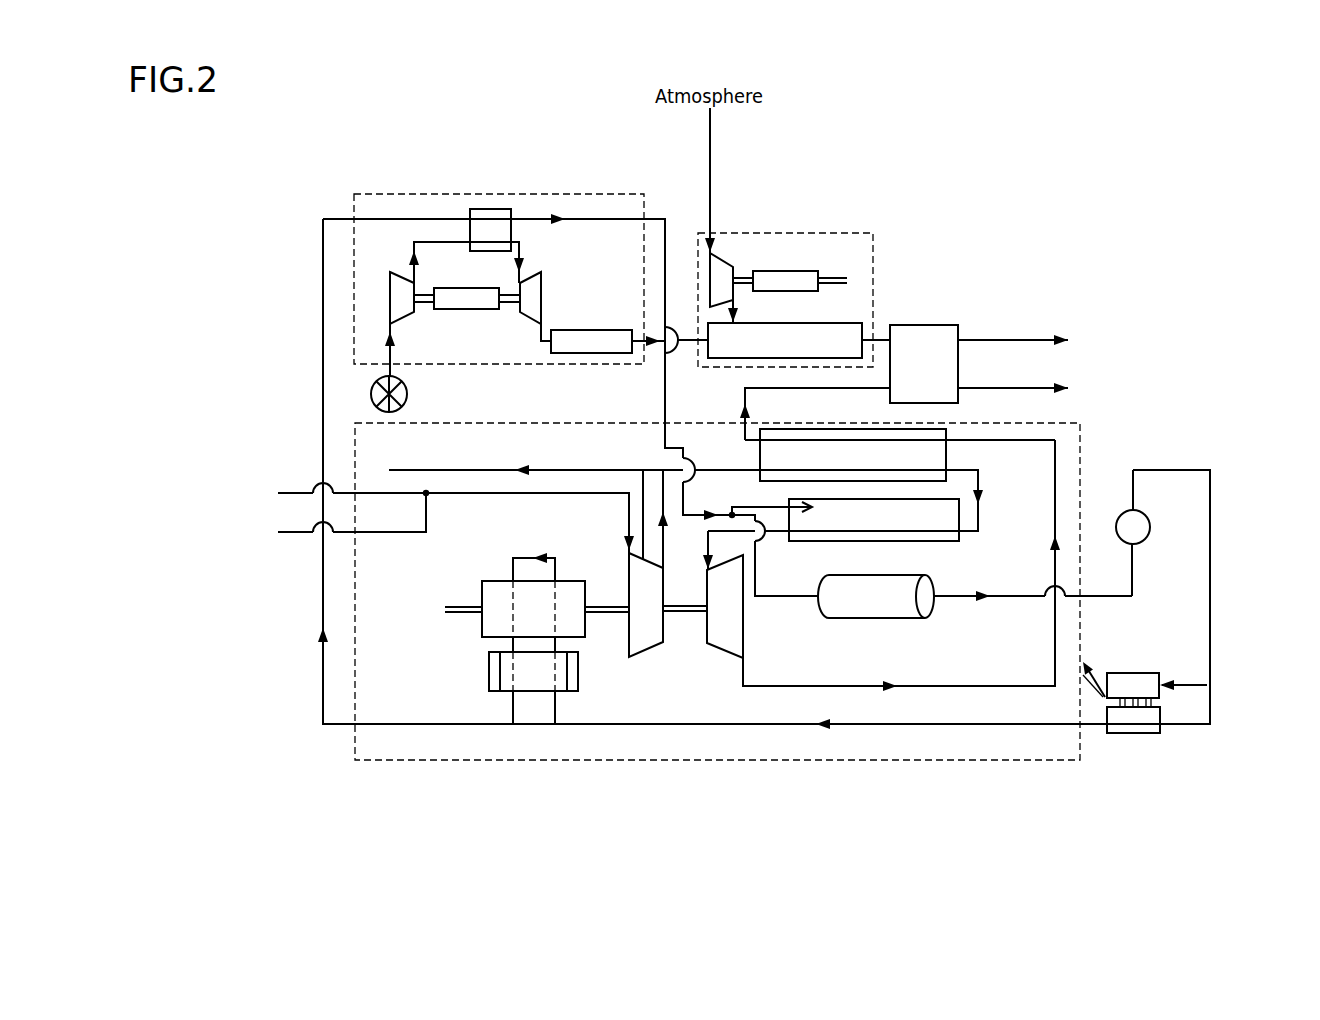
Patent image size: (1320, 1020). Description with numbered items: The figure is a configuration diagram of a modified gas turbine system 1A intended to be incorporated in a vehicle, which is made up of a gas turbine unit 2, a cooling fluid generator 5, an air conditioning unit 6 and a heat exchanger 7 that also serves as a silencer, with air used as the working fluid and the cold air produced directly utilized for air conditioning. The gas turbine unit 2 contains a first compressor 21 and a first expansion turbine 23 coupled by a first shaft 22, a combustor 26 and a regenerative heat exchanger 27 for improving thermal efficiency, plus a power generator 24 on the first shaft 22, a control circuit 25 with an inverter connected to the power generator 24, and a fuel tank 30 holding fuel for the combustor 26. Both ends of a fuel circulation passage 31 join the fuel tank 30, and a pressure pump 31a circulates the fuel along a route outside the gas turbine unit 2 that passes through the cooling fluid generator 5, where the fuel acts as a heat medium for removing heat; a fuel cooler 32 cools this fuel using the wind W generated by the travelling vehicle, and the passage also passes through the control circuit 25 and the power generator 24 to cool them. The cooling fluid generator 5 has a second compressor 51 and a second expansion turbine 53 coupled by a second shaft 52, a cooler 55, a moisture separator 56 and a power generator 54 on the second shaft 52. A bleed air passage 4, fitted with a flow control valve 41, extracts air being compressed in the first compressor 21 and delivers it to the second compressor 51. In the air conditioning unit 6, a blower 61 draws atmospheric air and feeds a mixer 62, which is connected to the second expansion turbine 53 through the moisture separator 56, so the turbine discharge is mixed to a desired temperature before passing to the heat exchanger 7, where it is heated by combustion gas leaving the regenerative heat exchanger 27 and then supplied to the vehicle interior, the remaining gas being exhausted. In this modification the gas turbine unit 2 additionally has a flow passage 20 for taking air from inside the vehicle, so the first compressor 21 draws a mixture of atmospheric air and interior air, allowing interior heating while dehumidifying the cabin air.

The gas turbine system 1A is at (1084, 175).
The gas turbine unit 2 is at (823, 762).
The bleed air passage 4 is at (562, 468).
The cooling fluid generator 5 is at (493, 194).
The air conditioning unit 6 is at (835, 233).
The heat exchanger 7 is at (925, 325).
The flow passage 20 is at (397, 533).
The first compressor 21 is at (646, 654).
The first shaft 22 is at (686, 613).
The first expansion turbine 23 is at (720, 654).
The power generator 24 is at (497, 580).
The control circuit 25 is at (489, 668).
The combustor 26 is at (930, 542).
The regenerative heat exchanger 27 is at (946, 455).
The fuel tank 30 is at (900, 620).
The fuel circulation passage 31 is at (1211, 595).
The pressure pump 31a is at (1148, 538).
The fuel cooler 32 is at (1130, 673).
The flow control valve 41 is at (407, 398).
The second compressor 51 is at (408, 312).
The second shaft 52 is at (512, 304).
The second expansion turbine 53 is at (541, 298).
The power generator 54 is at (467, 310).
The cooler 55 is at (511, 228).
The moisture separator 56 is at (600, 330).
The blower 61 is at (720, 258).
The mixer 62 is at (840, 323).
The wind W is at (1190, 683).